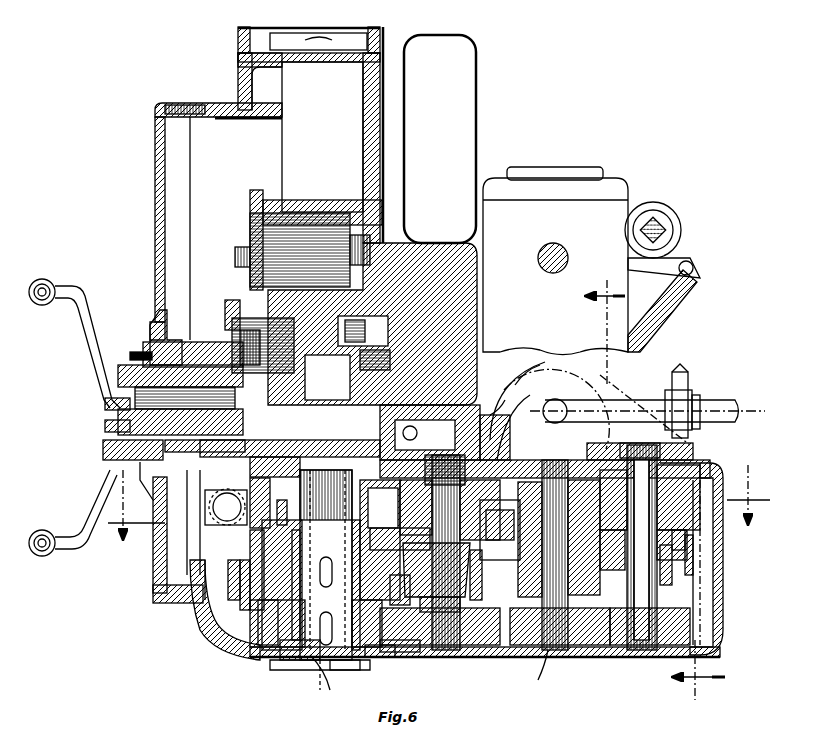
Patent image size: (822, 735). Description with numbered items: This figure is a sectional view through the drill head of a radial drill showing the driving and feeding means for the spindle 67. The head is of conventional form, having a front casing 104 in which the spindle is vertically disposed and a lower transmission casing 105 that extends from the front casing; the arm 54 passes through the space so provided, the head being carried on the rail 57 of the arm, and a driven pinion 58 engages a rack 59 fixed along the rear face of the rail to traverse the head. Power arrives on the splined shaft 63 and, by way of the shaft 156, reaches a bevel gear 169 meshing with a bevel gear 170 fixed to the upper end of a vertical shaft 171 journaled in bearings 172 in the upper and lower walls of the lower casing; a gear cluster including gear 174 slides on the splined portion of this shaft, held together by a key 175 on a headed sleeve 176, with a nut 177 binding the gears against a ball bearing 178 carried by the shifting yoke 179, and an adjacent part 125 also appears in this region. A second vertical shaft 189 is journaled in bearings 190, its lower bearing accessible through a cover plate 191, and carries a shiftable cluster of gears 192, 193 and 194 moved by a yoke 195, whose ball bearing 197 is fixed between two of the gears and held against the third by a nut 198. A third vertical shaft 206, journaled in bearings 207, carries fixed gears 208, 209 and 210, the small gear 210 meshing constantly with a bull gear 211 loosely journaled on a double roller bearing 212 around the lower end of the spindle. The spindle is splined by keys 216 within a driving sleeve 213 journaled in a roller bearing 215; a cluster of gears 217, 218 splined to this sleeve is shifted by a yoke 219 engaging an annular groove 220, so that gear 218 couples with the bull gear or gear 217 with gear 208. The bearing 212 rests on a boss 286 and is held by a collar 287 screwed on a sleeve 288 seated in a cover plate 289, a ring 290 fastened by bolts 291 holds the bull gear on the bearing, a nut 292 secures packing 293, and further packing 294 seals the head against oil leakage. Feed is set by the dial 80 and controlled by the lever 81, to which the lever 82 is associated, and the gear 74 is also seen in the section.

The front casing 104 is at (238, 86).
The gear 74 is at (322, 235).
The arm 54 is at (445, 268).
The rail 57 is at (368, 378).
The lower transmission casing 105 is at (600, 215).
The splined shaft 63 is at (560, 252).
The bevel gear 169 is at (690, 395).
The bevel gear 170 is at (608, 440).
The shaft 156 is at (680, 380).
The lever 81 is at (65, 285).
The bracket 82 is at (158, 320).
The setting and indicator dial 80 is at (150, 487).
The annular groove 220 is at (278, 525).
The gear 217 is at (283, 500).
The gear 218 is at (262, 540).
The yoke 219 is at (275, 548).
The roller bearing 215 is at (300, 580).
The collar 287 is at (295, 535).
The packing 293 is at (290, 598).
The bull gear 211 is at (203, 605).
The double roller bearing 212 is at (218, 615).
The bolts 291 is at (228, 600).
The ring 290 is at (245, 610).
The boss 286 is at (262, 645).
The sleeve 288 is at (280, 660).
The cover plate 289 is at (290, 670).
The keys 216 is at (312, 685).
The spindle 67 is at (345, 683).
The nut 292 is at (328, 673).
The rack 59 is at (445, 537).
The bearings 207 is at (462, 470).
The gear 208 is at (500, 478).
The vertical shaft 206 is at (430, 506).
The gear 209 is at (402, 545).
The gear 192 is at (500, 530).
The yoke 195 is at (451, 570).
The gear 193 is at (459, 586).
The ball bearing 197 is at (494, 575).
The small gear 210 is at (447, 590).
The vertical shaft 189 is at (545, 605).
The bearings 190 is at (545, 460).
The bearings 172 is at (580, 478).
The nut 198 is at (560, 620).
The key 175 is at (608, 526).
The ball bearing 178 is at (607, 564).
The cover plate 191 is at (534, 676).
The gear 194 is at (494, 429).
The driven pinion 58 is at (511, 377).
The vertical shaft 171 is at (640, 588).
The headed sleeve 176 is at (677, 517).
The nut 177 is at (672, 545).
The ring 125 is at (685, 530).
The gear 174 is at (690, 548).
The yoke 179 is at (695, 560).
The packing 294 is at (402, 655).
The driving sleeve 213 is at (392, 667).